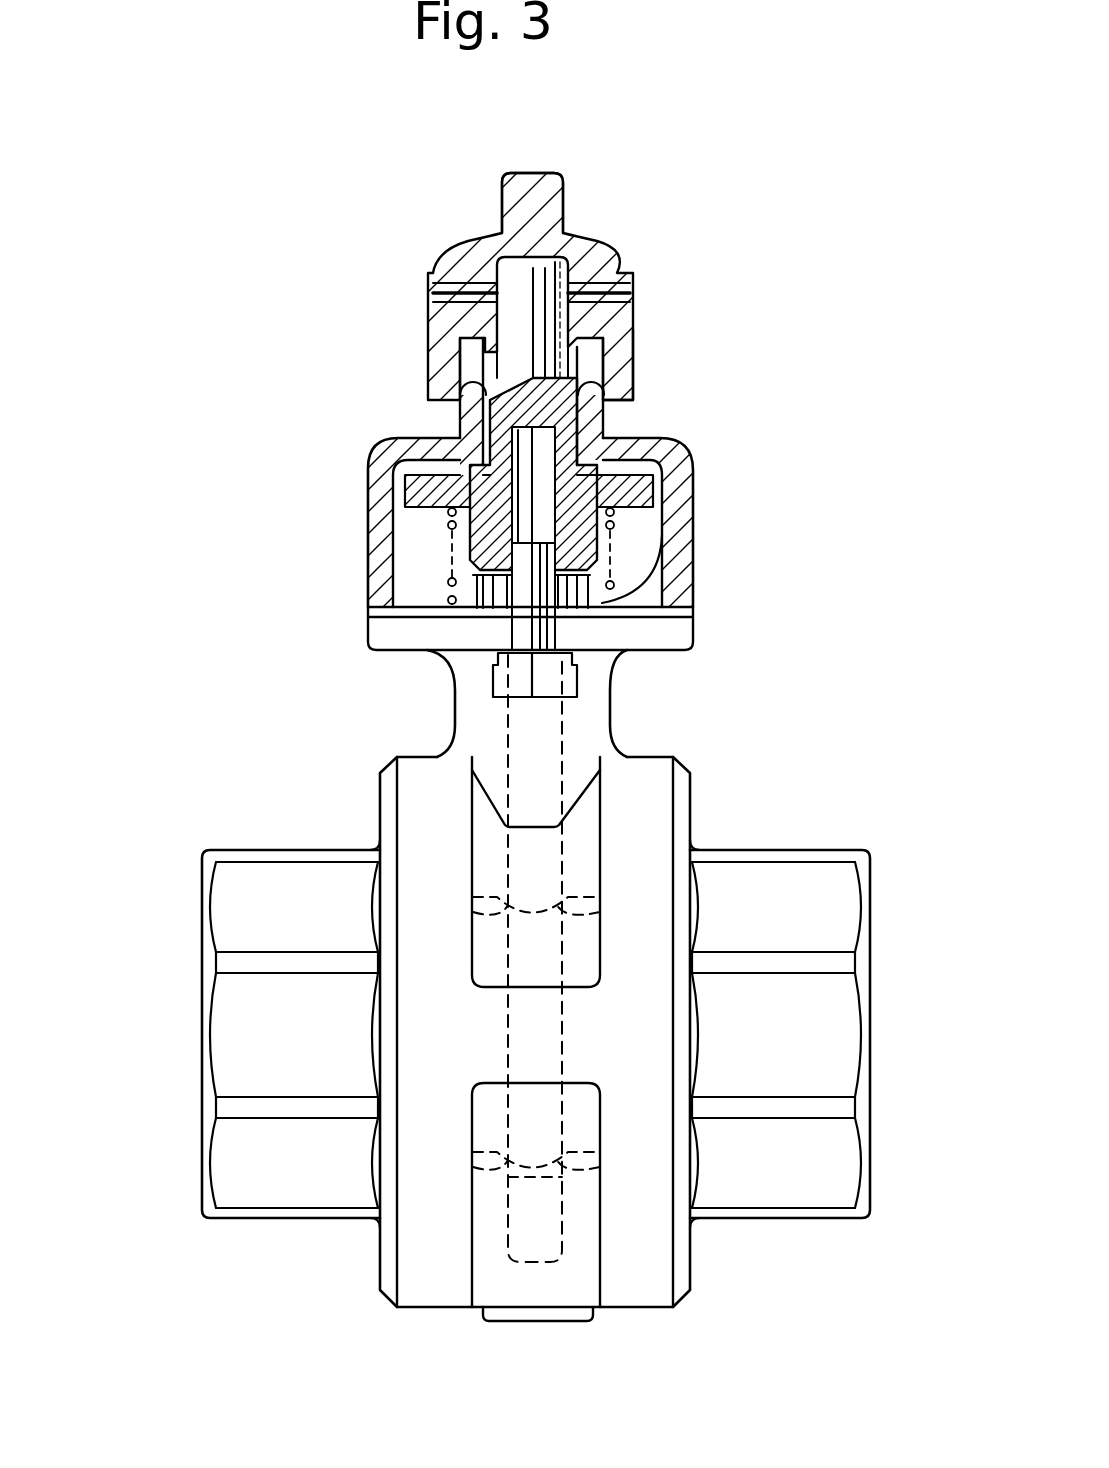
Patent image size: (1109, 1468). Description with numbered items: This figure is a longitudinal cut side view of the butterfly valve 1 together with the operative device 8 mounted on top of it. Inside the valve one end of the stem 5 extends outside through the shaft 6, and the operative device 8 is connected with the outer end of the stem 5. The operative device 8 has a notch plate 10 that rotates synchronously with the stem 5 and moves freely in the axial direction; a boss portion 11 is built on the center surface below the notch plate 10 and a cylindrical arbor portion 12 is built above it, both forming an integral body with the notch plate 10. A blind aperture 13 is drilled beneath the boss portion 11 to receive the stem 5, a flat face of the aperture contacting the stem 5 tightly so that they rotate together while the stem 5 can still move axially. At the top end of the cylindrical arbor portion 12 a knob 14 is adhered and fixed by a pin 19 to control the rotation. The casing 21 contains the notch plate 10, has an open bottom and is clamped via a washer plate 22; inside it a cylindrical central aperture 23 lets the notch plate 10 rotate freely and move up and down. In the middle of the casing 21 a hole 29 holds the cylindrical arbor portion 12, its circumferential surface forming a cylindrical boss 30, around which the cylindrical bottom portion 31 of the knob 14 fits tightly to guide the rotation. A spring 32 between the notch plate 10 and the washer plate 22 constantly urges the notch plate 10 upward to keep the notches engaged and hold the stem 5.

The butterfly valve 1 is at (628, 1287).
The stem 5 is at (512, 588).
The shaft 6 is at (587, 690).
The operative device 8 is at (700, 446).
The notch plate 10 is at (660, 500).
The boss portion 11 is at (600, 582).
The cylindrical arbor portion 12 is at (510, 325).
The blind aperture 13 is at (512, 515).
The knob 14 is at (640, 318).
The pin 19 is at (596, 252).
The casing 21 is at (690, 460).
The washer plate 22 is at (673, 617).
The central aperture 23 is at (412, 548).
The hole 29 is at (453, 427).
The cylindrical boss 30 is at (470, 378).
The cylindrical bottom portion 31 is at (625, 380).
The spring 32 is at (615, 520).